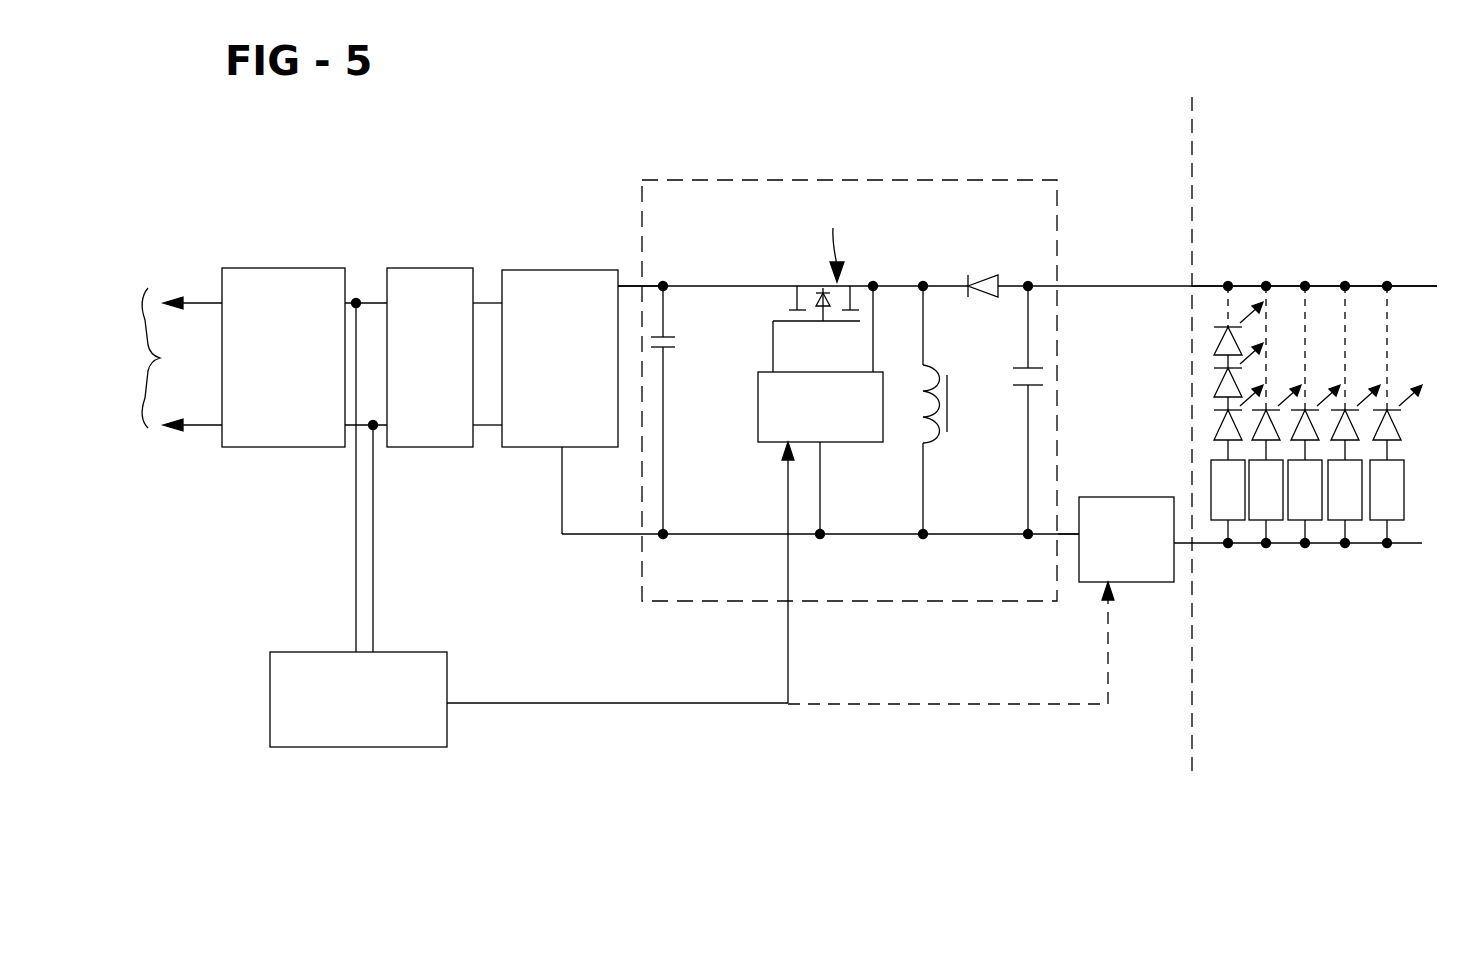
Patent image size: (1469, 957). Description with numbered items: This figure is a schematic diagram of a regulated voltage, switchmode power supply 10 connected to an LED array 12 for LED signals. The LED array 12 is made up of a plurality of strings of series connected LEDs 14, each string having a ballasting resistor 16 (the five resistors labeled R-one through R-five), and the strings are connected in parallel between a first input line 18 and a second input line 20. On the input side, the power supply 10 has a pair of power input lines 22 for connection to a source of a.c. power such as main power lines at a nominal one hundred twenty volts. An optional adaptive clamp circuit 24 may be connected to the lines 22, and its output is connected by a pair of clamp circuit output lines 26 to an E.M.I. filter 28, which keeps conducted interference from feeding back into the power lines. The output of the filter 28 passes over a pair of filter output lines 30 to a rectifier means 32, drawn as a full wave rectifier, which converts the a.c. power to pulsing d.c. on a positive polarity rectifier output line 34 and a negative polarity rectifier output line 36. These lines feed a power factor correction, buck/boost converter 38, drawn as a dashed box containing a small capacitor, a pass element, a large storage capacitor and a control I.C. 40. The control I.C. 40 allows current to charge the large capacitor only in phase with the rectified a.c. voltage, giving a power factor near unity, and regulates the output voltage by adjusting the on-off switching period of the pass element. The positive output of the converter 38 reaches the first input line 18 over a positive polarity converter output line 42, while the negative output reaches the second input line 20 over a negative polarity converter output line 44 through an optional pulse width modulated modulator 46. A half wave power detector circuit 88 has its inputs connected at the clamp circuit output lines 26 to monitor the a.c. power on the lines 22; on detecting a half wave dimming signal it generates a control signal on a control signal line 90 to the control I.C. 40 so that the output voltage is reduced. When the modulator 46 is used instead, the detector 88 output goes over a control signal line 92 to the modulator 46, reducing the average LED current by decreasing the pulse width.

The regulated voltage, switchmode power supply 10 is at (530, 130).
The LED array 12 is at (1288, 146).
The LEDs 14 is at (1215, 385).
The ballasting resistor 16 is at (1210, 478).
The first input line 18 is at (1207, 286).
The second input line 20 is at (1200, 545).
The power input lines 22 is at (197, 300).
The adaptive clamp circuit 24 is at (305, 268).
The clamp circuit output lines 26 is at (375, 300).
The E.M.I. filter 28 is at (440, 268).
The filter output lines 30 is at (490, 303).
The rectifier means 32 is at (578, 270).
The positive polarity rectifier output line 34 is at (637, 283).
The negative polarity rectifier output line 36 is at (562, 517).
The power factor correction, buck/boost converter 38 is at (818, 180).
The control I.C. 40 is at (758, 410).
The positive polarity converter output line 42 is at (1100, 286).
The negative polarity converter output line 44 is at (1067, 545).
The pulse width modulated modulator 46 is at (1105, 497).
The half wave power detector circuit 88 is at (270, 698).
The control signal line 90 is at (497, 703).
The control signal line 92 is at (1108, 668).